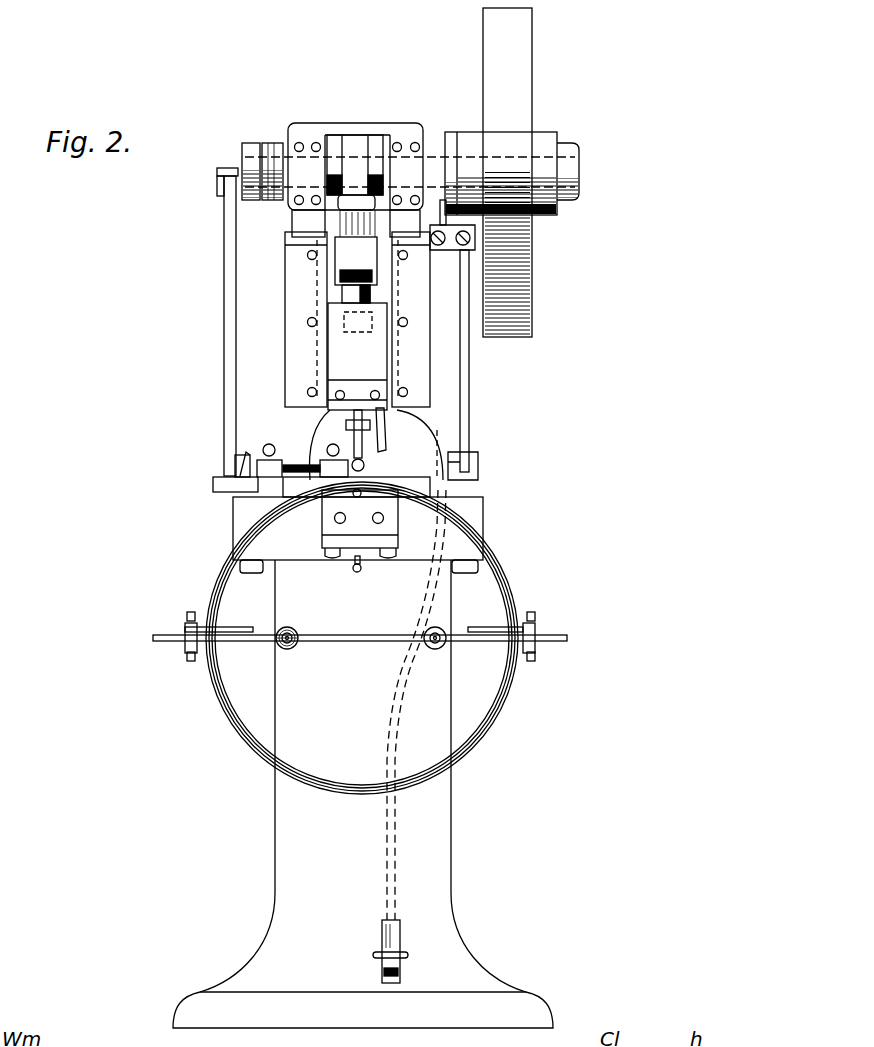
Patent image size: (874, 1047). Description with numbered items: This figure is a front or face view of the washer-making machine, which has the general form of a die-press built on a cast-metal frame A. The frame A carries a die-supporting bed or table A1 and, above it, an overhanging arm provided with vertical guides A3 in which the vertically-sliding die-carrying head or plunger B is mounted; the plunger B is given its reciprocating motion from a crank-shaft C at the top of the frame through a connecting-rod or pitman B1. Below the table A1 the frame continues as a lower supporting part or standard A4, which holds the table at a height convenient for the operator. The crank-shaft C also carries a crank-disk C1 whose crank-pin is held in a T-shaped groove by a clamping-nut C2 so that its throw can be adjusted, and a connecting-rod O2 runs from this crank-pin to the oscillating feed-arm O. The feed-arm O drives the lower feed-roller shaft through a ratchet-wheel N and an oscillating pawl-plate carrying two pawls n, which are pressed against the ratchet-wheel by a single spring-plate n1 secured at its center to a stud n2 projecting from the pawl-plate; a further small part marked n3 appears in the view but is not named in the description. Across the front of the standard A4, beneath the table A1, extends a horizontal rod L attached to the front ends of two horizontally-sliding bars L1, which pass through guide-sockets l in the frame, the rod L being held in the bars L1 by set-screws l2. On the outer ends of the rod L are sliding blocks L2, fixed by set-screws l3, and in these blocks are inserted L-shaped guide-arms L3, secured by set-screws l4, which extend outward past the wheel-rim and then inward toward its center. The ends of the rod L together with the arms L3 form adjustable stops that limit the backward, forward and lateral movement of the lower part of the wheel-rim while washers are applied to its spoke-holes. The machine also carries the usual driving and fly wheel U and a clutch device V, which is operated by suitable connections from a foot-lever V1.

The driving and fly wheel U is at (507, 172).
The frame A is at (350, 132).
The crank-shaft C is at (440, 165).
The crank-disk C1 is at (275, 160).
The clamping-nut C2 is at (238, 168).
The connecting-rod O2 is at (224, 318).
The vertical guides A3 is at (357, 319).
The connecting-rod or pitman B1 is at (356, 270).
The die-carrying head or plunger B is at (357, 356).
The plunger rod n3 is at (355, 430).
The stud n2 is at (380, 428).
The clutch device V is at (460, 280).
The ratchet-wheel N is at (218, 489).
The feed-arm O is at (244, 462).
The die-supporting bed or table A1 is at (358, 525).
The pawls n is at (390, 540).
The spring-plate n1 is at (360, 494).
The standard A4 is at (363, 794).
The horizontal rod L is at (350, 641).
The horizontally-sliding bars L1 is at (428, 644).
The sliding blocks L2 is at (564, 618).
The L-shaped guide-arms L3 is at (492, 622).
The guide-sockets l is at (283, 630).
The set-screws l2 is at (296, 632).
The set-screws l3 is at (540, 664).
The set-screws l4 is at (369, 605).
The foot-lever V1 is at (400, 945).